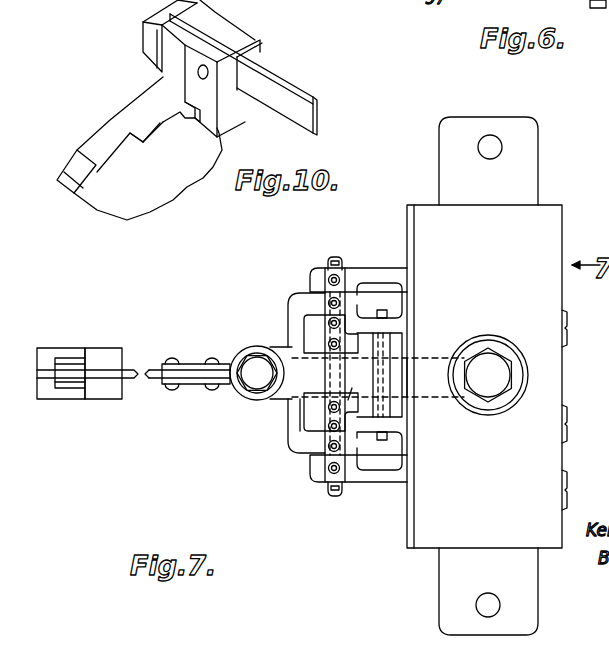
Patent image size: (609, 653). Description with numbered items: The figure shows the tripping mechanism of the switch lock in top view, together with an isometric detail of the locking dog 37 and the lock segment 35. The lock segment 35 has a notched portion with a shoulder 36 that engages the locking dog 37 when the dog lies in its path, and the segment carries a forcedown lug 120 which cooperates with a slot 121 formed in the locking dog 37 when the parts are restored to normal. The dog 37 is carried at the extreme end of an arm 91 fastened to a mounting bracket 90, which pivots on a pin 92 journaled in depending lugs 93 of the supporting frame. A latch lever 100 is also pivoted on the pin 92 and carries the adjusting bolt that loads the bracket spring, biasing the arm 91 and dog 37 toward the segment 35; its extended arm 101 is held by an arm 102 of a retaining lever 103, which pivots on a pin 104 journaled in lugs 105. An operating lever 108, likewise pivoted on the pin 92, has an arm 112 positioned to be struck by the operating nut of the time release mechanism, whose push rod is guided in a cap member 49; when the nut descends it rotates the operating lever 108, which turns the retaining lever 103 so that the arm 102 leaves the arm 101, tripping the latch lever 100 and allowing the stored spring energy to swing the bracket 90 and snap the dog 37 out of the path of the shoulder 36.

In FIG. 10, the lock segment 35 is at (120, 104).
In FIG. 10, the shoulder 36 is at (80, 150).
In FIG. 10, the locking dog 37 is at (250, 30).
In FIG. 7, the locking dog 37 is at (100, 348).
In FIG. 7, the cap member 49 is at (496, 366).
In FIG. 7, the mounting bracket 90 is at (292, 305).
In FIG. 10, the arm 91 is at (305, 90).
In FIG. 7, the arm 91 is at (138, 365).
In FIG. 7, the pin 92 is at (328, 487).
In FIG. 7, the depending lugs 93 is at (310, 268).
In FIG. 7, the latch lever 100 is at (304, 338).
In FIG. 7, the extended arm 101 is at (300, 400).
In FIG. 7, the arm 102 is at (304, 420).
In FIG. 7, the retaining lever 103 is at (397, 345).
In FIG. 7, the pin 104 is at (390, 306).
In FIG. 7, the lugs 105 is at (395, 310).
In FIG. 7, the operating lever 108 is at (379, 376).
In FIG. 7, the arm 112 is at (431, 387).
In FIG. 10, the forcedown lug 120 is at (156, 138).
In FIG. 10, the slot 121 is at (192, 118).